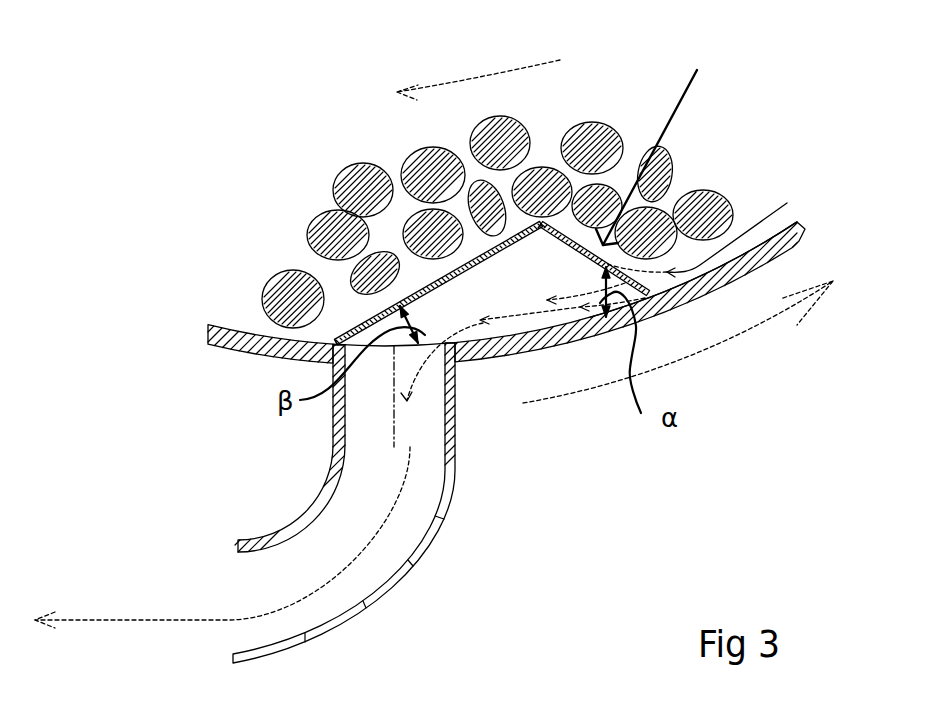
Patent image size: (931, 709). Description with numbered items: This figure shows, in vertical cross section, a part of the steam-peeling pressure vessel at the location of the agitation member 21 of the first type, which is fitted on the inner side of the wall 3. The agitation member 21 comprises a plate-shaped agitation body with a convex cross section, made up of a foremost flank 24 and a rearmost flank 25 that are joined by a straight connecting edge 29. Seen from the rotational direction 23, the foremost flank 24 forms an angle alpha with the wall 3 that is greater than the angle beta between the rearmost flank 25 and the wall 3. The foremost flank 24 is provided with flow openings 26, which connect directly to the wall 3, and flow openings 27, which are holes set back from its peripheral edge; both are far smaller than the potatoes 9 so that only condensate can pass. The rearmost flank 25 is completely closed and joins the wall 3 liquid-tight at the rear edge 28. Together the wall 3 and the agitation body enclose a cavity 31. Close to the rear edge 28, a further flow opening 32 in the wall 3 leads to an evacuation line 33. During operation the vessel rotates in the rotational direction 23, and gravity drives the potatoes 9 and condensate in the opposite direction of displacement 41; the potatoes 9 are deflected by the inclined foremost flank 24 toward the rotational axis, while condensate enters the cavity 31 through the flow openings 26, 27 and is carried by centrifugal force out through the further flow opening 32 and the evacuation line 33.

The wall 3 is at (792, 241).
The potatoes 9 is at (330, 228).
The agitation member 21 is at (661, 139).
The rotational direction 23 is at (702, 348).
The foremost flank 24 is at (563, 243).
The rearmost flank 25 is at (467, 265).
The flow openings 26 is at (653, 296).
The flow openings 27 is at (595, 270).
The rear edge 28 is at (328, 343).
The connecting edge 29 is at (541, 226).
The cavity 31 is at (479, 314).
The further flow opening 32 is at (433, 348).
The evacuation line 33 is at (417, 563).
The direction of displacement 41 is at (503, 78).